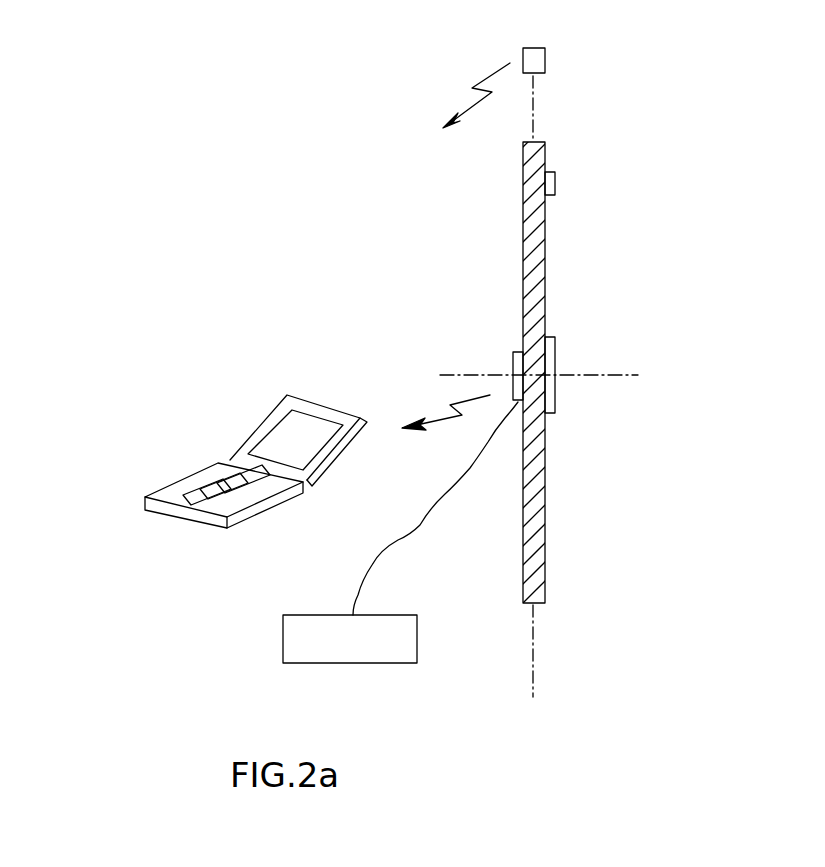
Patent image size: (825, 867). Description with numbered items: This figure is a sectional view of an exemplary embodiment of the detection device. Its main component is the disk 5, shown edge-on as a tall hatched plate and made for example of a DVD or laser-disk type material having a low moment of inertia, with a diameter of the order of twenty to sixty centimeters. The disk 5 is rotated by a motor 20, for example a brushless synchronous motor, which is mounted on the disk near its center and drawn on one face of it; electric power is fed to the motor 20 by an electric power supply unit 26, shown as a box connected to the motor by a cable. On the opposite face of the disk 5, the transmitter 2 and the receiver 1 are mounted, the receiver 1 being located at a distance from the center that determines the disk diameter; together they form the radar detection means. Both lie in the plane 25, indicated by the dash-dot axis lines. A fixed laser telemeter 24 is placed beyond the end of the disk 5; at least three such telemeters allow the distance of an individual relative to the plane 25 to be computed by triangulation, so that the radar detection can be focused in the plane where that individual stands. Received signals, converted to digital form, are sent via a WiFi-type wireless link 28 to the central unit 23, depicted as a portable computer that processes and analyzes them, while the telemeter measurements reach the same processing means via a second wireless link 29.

The receiver 1 is at (555, 183).
The transmitter 2 is at (550, 348).
The disk 5 is at (523, 555).
The motor 20 is at (513, 363).
The central unit 23 is at (258, 515).
The laser telemeter 24 is at (545, 60).
The plane 25 is at (533, 680).
The electric power supply unit 26 is at (362, 663).
The wireless link 28 is at (442, 423).
The wireless link 29 is at (480, 105).